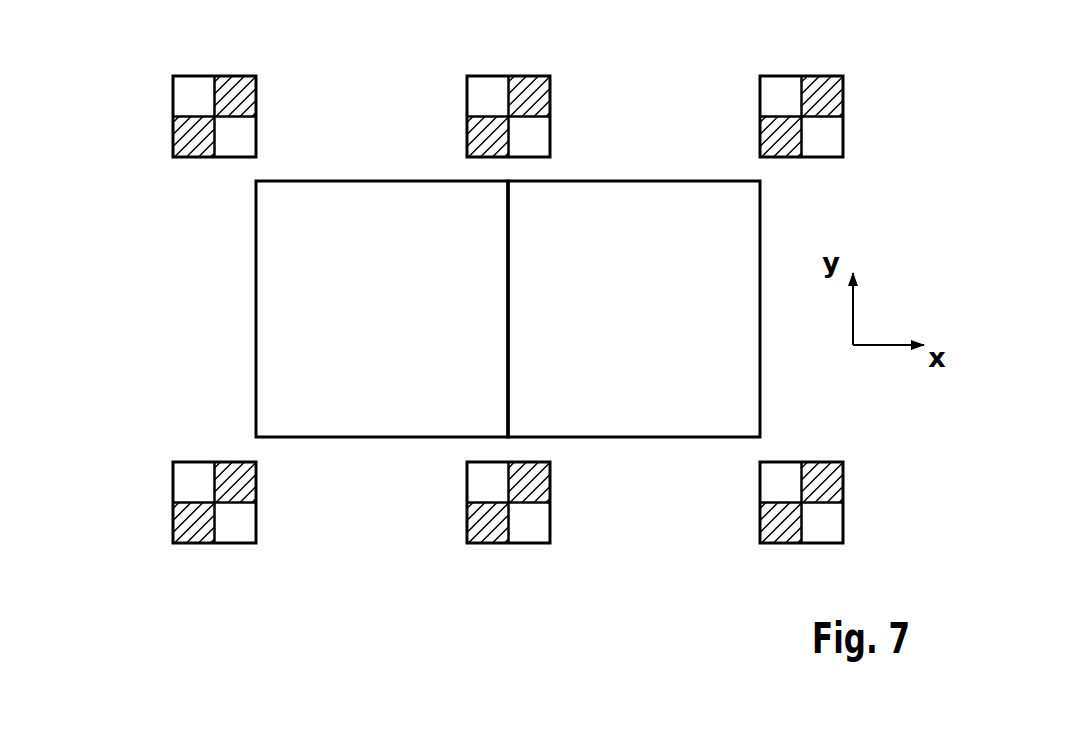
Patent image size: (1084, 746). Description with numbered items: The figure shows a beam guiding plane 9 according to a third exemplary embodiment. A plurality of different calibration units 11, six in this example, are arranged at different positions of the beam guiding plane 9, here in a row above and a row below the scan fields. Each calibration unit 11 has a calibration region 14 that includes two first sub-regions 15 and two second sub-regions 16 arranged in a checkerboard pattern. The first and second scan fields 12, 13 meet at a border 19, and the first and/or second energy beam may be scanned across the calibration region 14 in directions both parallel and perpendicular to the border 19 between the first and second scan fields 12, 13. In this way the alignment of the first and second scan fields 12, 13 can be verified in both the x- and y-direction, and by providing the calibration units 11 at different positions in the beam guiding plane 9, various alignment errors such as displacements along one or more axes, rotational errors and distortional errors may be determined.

The beam guiding plane 9 is at (887, 537).
The calibration unit 11 is at (439, 273).
The first scan field 12 is at (302, 383).
The second scan field 13 is at (682, 383).
The calibration region 14 is at (267, 83).
The first sub-region 15 is at (187, 85).
The second sub-region 16 is at (240, 85).
The border 19 is at (508, 272).